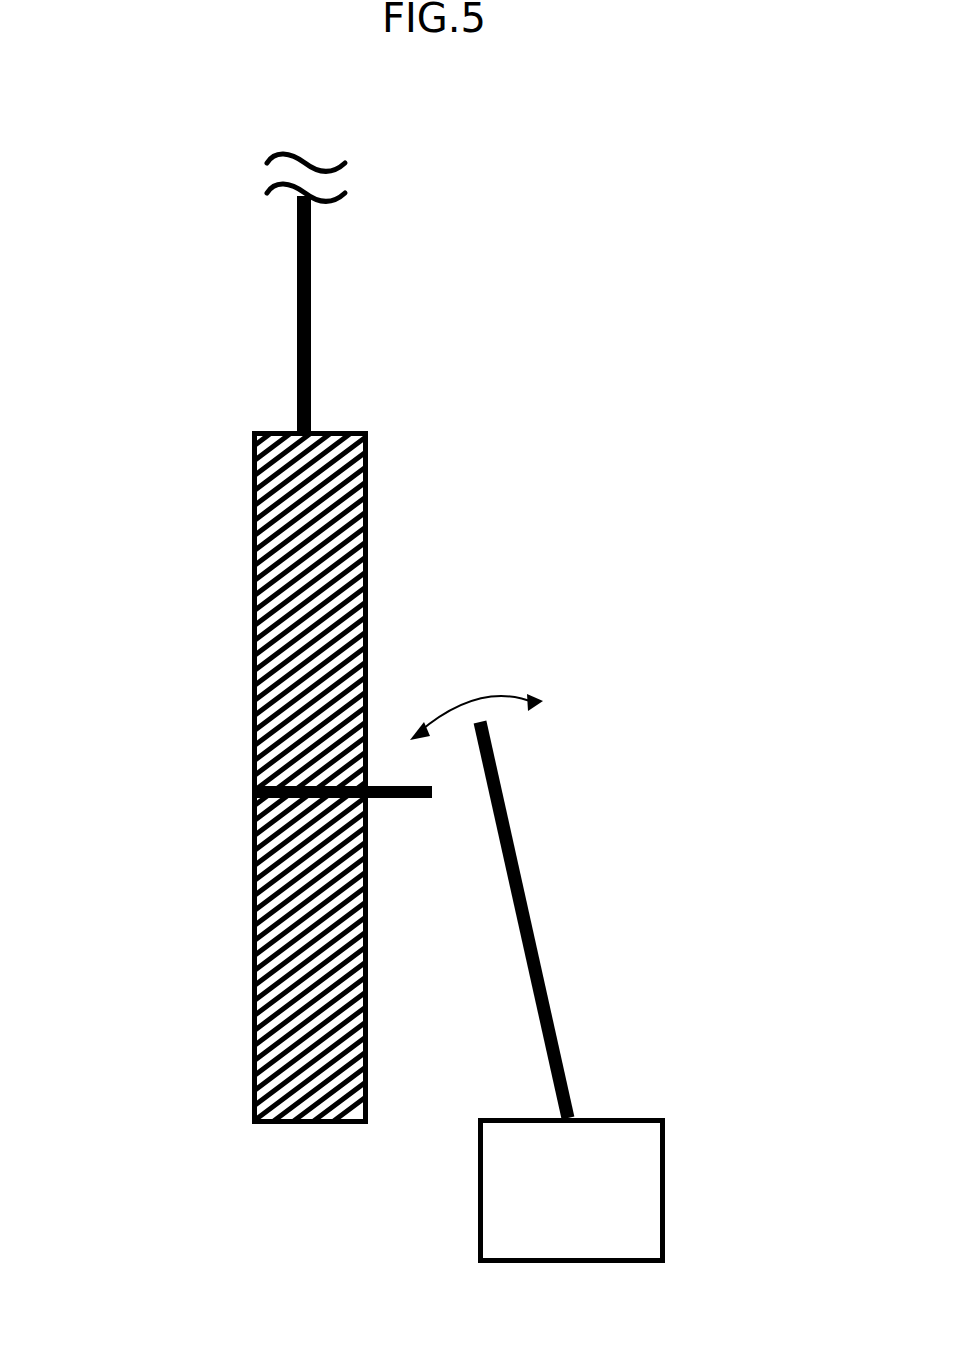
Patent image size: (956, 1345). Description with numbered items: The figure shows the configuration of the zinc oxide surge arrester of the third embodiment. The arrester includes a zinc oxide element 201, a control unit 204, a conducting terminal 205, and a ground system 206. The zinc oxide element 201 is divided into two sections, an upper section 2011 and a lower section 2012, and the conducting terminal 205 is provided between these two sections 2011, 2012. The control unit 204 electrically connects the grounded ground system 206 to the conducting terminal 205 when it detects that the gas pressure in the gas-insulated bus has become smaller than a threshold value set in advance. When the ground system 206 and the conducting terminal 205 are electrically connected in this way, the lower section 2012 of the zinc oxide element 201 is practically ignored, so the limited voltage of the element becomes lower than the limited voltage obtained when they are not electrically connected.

The zinc oxide element 201 is at (251, 477).
The upper section 2011 is at (251, 740).
The lower section 2012 is at (252, 1033).
The control unit 204 is at (665, 1195).
The conducting terminal 205 is at (383, 800).
The ground system 206 is at (537, 950).